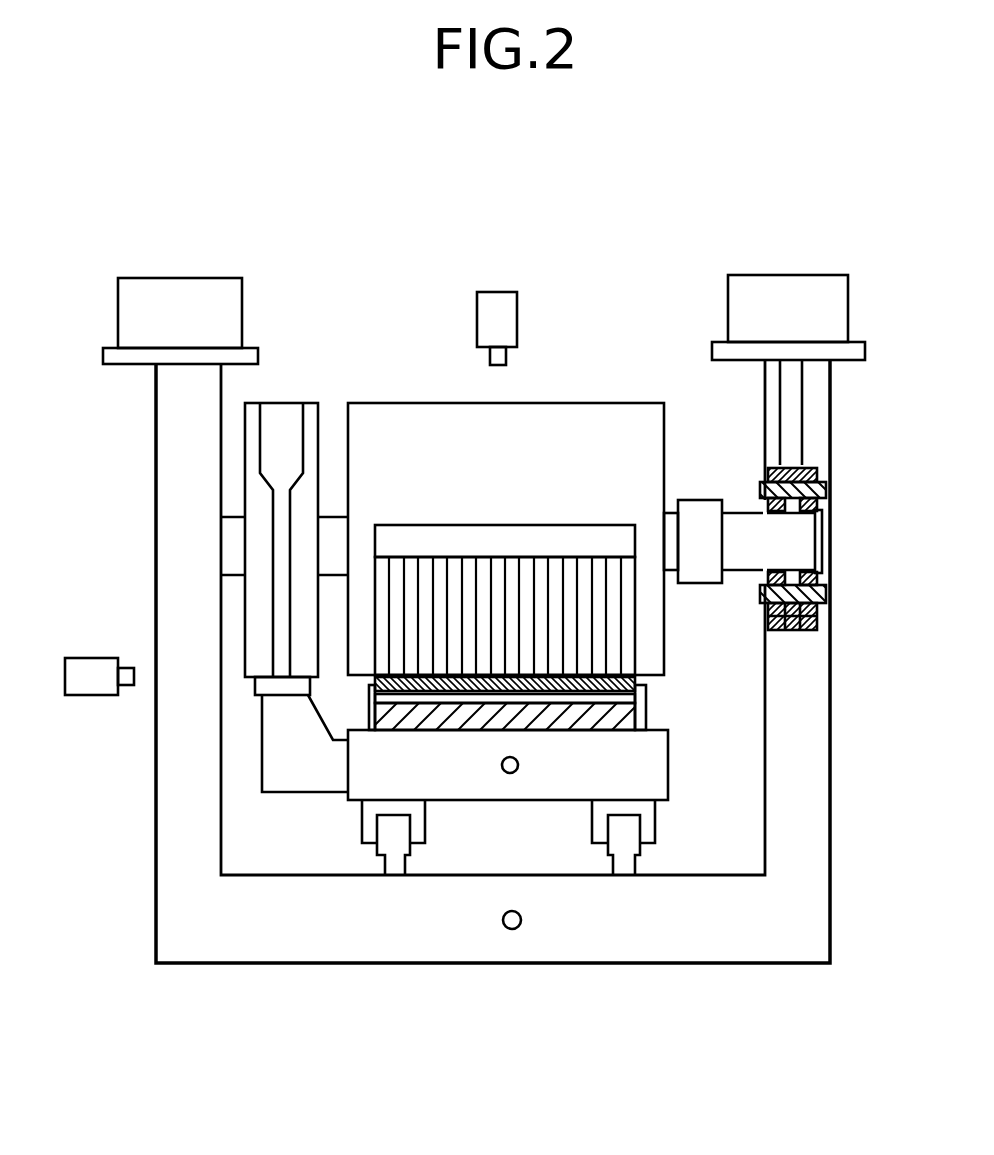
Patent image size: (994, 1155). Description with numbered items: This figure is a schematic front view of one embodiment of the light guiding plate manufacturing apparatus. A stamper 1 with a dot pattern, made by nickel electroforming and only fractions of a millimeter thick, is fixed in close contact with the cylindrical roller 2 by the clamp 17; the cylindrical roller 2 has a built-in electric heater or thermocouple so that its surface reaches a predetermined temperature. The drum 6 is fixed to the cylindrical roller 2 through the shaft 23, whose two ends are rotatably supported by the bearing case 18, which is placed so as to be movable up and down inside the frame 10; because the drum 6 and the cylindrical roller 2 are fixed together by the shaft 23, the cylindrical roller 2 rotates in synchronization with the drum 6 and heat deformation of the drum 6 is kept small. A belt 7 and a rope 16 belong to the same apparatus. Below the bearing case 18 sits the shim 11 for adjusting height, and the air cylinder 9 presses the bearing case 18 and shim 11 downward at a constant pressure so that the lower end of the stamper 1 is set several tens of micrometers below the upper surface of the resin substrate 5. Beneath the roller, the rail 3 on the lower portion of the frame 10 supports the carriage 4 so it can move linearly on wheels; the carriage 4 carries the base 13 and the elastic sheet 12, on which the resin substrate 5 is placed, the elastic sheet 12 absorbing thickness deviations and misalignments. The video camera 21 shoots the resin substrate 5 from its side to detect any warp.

The stamper 1 is at (533, 570).
The cylindrical roller 2 is at (410, 425).
The rail 3 is at (393, 862).
The carriage 4 is at (447, 783).
The resin substrate 5 is at (640, 677).
The drum 6 is at (303, 498).
The belt 7 is at (288, 418).
The air cylinder 9 is at (180, 298).
The frame 10 is at (228, 938).
The shim 11 is at (823, 613).
The elastic sheet 12 is at (622, 703).
The base 13 is at (553, 723).
The rope 16 is at (517, 770).
The clamp 17 is at (592, 538).
The bearing case 18 is at (817, 490).
The video camera 21 is at (90, 662).
The shaft 23 is at (737, 530).